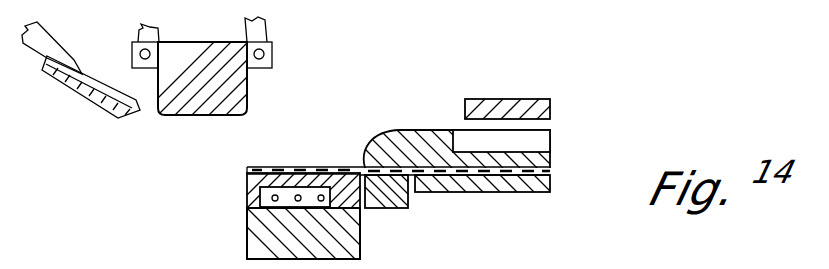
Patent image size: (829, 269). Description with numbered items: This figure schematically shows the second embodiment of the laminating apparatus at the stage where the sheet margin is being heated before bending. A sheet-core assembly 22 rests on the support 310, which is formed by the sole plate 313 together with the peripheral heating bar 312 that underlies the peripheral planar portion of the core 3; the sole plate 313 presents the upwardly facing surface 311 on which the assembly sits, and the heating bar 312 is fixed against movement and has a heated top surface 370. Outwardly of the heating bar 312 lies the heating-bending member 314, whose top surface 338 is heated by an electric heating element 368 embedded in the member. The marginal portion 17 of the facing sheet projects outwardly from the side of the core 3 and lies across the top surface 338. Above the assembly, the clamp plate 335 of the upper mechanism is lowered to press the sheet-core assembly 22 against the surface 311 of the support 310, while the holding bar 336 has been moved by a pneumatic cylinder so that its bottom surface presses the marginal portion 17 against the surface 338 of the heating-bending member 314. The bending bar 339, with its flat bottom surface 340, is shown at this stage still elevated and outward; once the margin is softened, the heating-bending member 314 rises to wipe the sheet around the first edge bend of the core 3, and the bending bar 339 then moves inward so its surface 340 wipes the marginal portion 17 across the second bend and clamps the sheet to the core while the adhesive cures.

The core 3 is at (421, 146).
The marginal portions of the facing sheet 17 is at (308, 167).
The sheet-core assembly 22 is at (552, 135).
The support 310 is at (464, 204).
The upwardly facing surface of the sole plate 311 is at (553, 170).
The peripheral heating bar 312 is at (410, 209).
The sole plate 313 is at (537, 185).
The heating-bending member 314 is at (252, 180).
The clamp plate or pressure foot 335 is at (526, 104).
The holding bar 336 is at (78, 98).
The top surface of heating-bending member 338 is at (250, 166).
The bending bar 339 is at (247, 90).
The flat bottom surface of bending bar 340 is at (195, 115).
The electric heating element 368 is at (264, 198).
The top surface of heating bar 370 is at (393, 168).